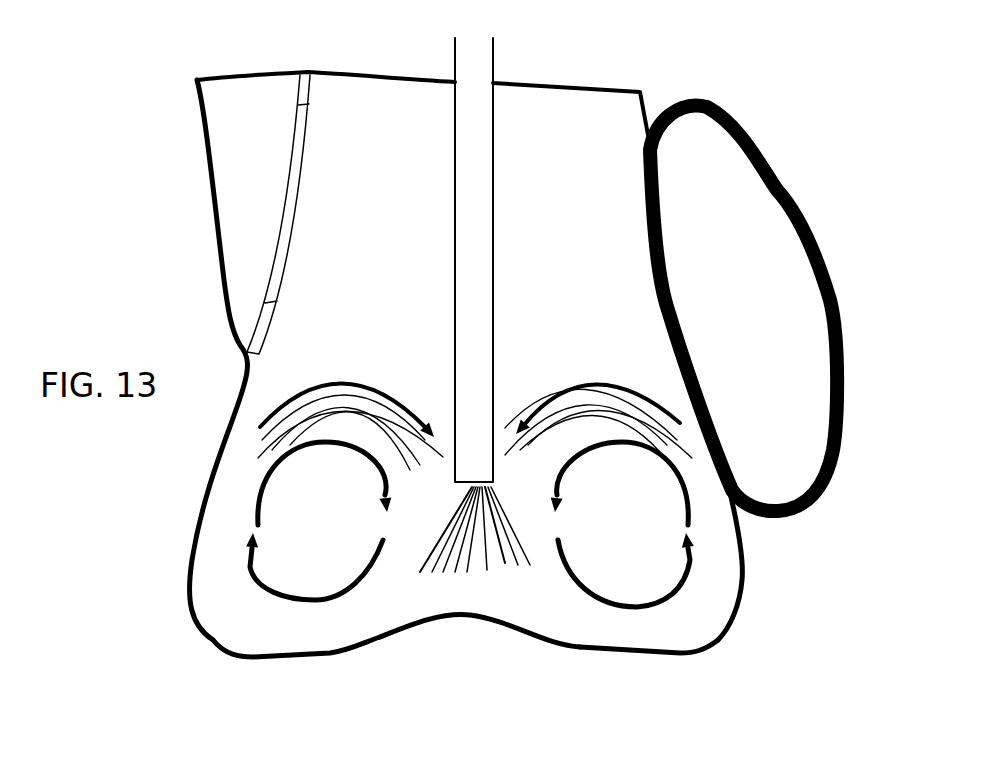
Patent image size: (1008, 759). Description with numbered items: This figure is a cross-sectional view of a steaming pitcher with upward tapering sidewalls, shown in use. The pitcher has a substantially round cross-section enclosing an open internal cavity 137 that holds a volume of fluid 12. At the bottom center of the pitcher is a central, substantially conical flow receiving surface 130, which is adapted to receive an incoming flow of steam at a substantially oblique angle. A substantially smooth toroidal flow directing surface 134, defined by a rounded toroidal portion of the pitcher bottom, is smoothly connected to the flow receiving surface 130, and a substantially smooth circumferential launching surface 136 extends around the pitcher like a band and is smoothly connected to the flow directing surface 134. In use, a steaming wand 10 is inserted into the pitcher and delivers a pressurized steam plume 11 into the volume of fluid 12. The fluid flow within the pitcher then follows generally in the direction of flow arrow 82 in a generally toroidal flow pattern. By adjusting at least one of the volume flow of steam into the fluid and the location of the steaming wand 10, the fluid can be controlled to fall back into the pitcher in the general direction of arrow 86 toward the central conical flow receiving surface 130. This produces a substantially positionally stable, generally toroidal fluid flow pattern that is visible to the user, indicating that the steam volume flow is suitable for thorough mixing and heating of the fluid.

The steaming wand 10 is at (480, 151).
The pressurized steam plume 11 is at (482, 538).
The volume of fluid 12 is at (247, 488).
The flow arrow 82 is at (260, 505).
The arrow 86 is at (593, 387).
The central substantially conical flow receiving surface 130 is at (478, 622).
The toroidal flow directing surface 134 is at (213, 640).
The circumferential launching surface 136 is at (223, 445).
The open internal cavity 137 is at (432, 388).